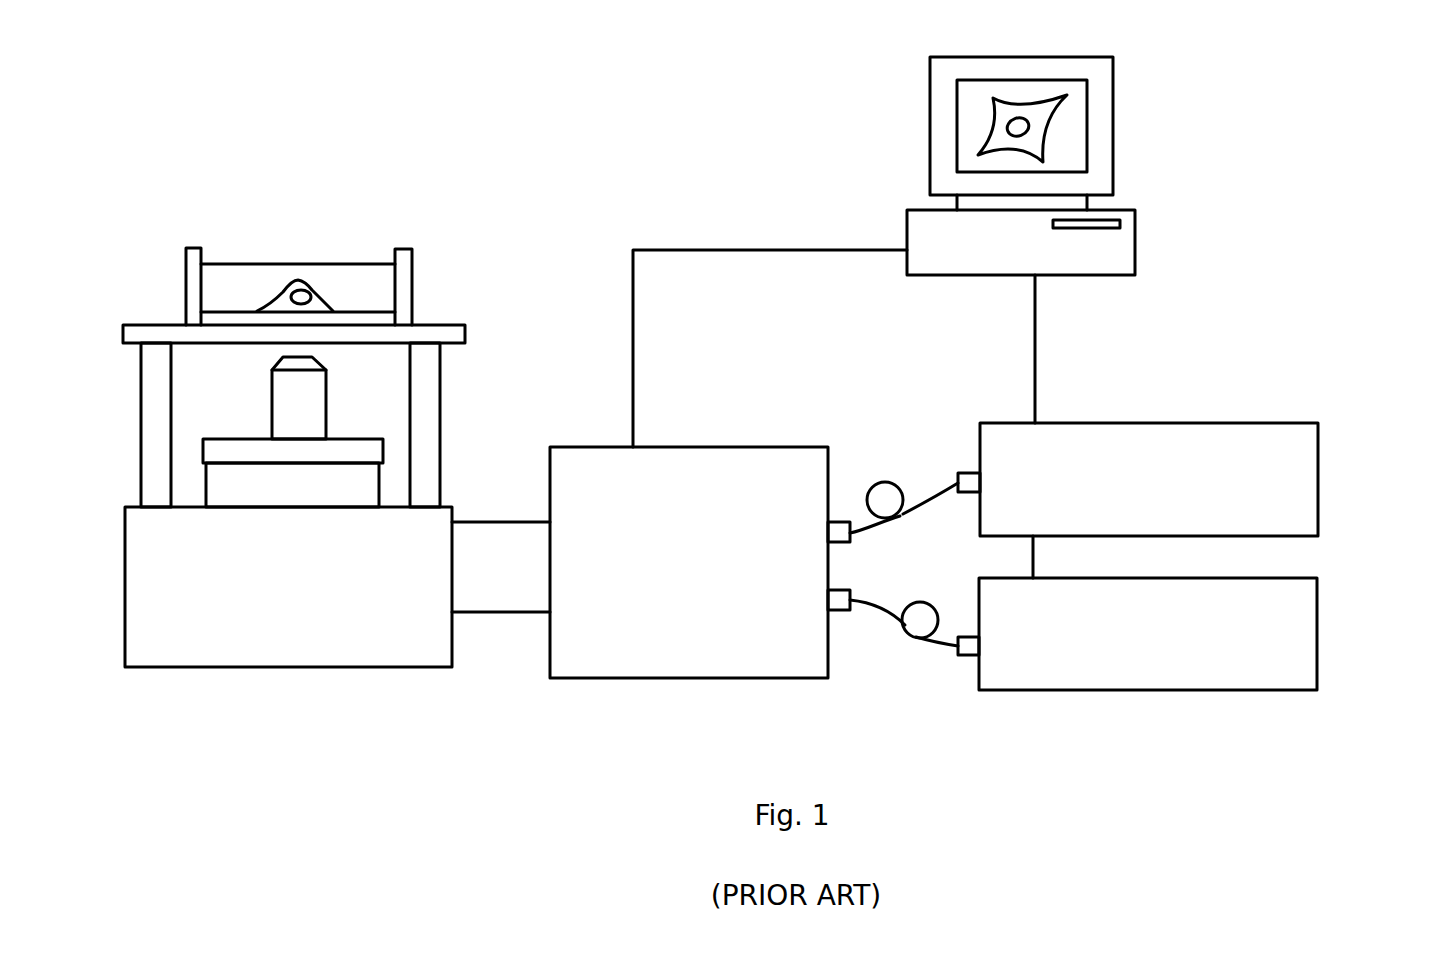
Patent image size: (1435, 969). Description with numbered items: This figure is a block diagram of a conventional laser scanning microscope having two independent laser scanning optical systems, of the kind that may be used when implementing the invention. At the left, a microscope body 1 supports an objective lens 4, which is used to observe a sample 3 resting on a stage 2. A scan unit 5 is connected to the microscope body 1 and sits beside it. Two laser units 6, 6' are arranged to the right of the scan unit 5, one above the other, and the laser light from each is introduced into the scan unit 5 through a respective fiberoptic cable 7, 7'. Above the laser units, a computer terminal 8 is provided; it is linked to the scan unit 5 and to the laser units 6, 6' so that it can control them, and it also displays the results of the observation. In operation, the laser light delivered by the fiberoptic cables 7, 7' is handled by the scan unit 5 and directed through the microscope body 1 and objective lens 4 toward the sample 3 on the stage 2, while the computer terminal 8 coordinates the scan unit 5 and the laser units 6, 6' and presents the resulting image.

The microscope body 1 is at (295, 667).
The stage 2 is at (465, 333).
The sample 3 is at (323, 290).
The objective lens 4 is at (267, 392).
The scan unit 5 is at (698, 447).
The laser unit 6 is at (1184, 479).
The laser unit 6' is at (1186, 634).
The fiberoptic cable 7 is at (904, 464).
The fiberoptic cable 7' is at (904, 665).
The computer terminal 8 is at (1135, 243).